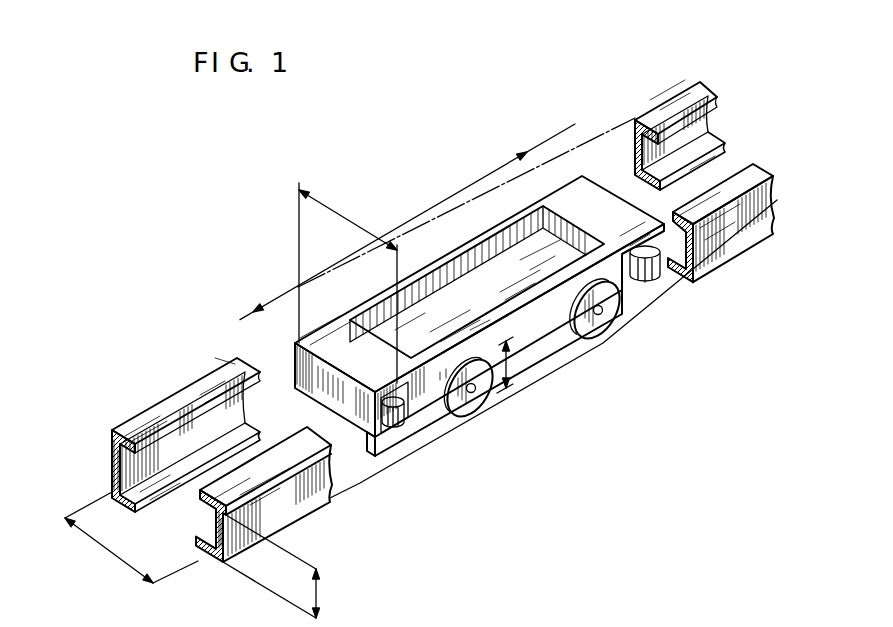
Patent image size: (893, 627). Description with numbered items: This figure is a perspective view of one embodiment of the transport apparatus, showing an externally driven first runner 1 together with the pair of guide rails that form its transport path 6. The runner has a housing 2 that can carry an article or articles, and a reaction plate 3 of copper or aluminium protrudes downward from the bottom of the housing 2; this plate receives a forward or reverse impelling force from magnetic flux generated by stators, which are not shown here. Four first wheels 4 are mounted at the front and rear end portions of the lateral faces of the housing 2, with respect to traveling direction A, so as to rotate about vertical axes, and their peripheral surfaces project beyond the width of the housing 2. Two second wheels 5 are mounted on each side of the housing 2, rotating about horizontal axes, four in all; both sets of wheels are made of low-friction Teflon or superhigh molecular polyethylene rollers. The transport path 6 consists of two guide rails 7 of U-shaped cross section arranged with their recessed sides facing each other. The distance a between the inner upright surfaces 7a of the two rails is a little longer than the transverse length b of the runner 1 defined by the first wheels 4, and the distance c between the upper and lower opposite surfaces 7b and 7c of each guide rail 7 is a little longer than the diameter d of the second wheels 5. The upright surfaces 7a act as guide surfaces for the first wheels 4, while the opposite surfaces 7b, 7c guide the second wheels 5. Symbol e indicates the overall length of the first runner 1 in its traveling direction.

The first runner 1 is at (462, 237).
The housing 2 is at (550, 262).
The reaction plate 3 is at (560, 340).
The first wheels 4 is at (294, 340).
The second wheels 5 is at (599, 333).
The transport path 6 is at (730, 121).
The guide rail 7 is at (680, 96).
The inner upright surface 7a is at (113, 468).
The upper opposite surface 7b is at (200, 492).
The lower opposite surface 7c is at (180, 462).
The traveling direction A is at (266, 432).
The distance between inner upright surfaces a is at (421, 391).
The transverse length of runner b is at (348, 283).
The distance between upper and lower opposite surfaces c is at (278, 566).
The diameter of second wheels d is at (509, 368).
The overall length of first runner e is at (430, 208).